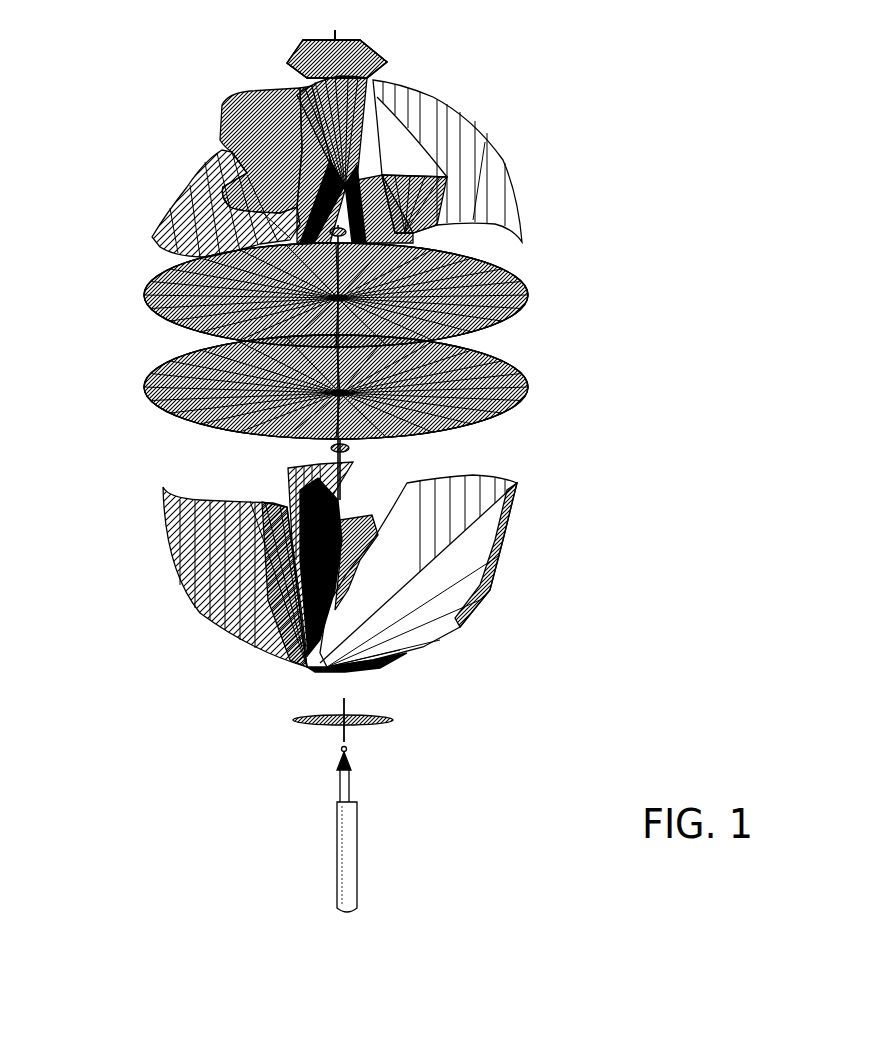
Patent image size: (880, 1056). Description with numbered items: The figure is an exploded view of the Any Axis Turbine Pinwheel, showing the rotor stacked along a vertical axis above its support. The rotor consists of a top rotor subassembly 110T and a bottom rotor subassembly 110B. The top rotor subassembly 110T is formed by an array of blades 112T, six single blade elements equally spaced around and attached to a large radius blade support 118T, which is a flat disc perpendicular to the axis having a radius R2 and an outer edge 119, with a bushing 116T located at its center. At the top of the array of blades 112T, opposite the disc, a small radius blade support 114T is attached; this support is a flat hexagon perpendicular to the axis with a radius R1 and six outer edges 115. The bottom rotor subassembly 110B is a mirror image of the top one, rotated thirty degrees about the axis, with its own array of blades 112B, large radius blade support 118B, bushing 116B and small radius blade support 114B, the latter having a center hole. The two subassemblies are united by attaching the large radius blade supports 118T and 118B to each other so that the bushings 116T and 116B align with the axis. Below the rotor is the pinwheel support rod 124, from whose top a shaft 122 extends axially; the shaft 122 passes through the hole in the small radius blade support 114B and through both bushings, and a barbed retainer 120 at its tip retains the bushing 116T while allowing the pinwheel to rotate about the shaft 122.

The top rotor subassembly 110T is at (568, 332).
The bottom rotor subassembly 110B is at (568, 332).
The array of blades (top) 112T is at (178, 182).
The array of blades (bottom) 112B is at (203, 605).
The small radius blade support (top) 114T is at (305, 58).
The small radius blade support (bottom) 114B is at (300, 717).
The outer edges 115 is at (373, 52).
The bushing (top) 116T is at (335, 232).
The bushing (bottom) 116B is at (333, 449).
The large radius blade support (top) 118T is at (165, 312).
The large radius blade support (bottom) 118B is at (148, 385).
The outer edge 119 is at (142, 292).
The radius of small radius blade support R1 is at (337, 65).
The radius of large radius blade support R2 is at (170, 268).
The barbed retainer 120 is at (340, 752).
The shaft 122 is at (343, 780).
The rod 124 is at (347, 857).